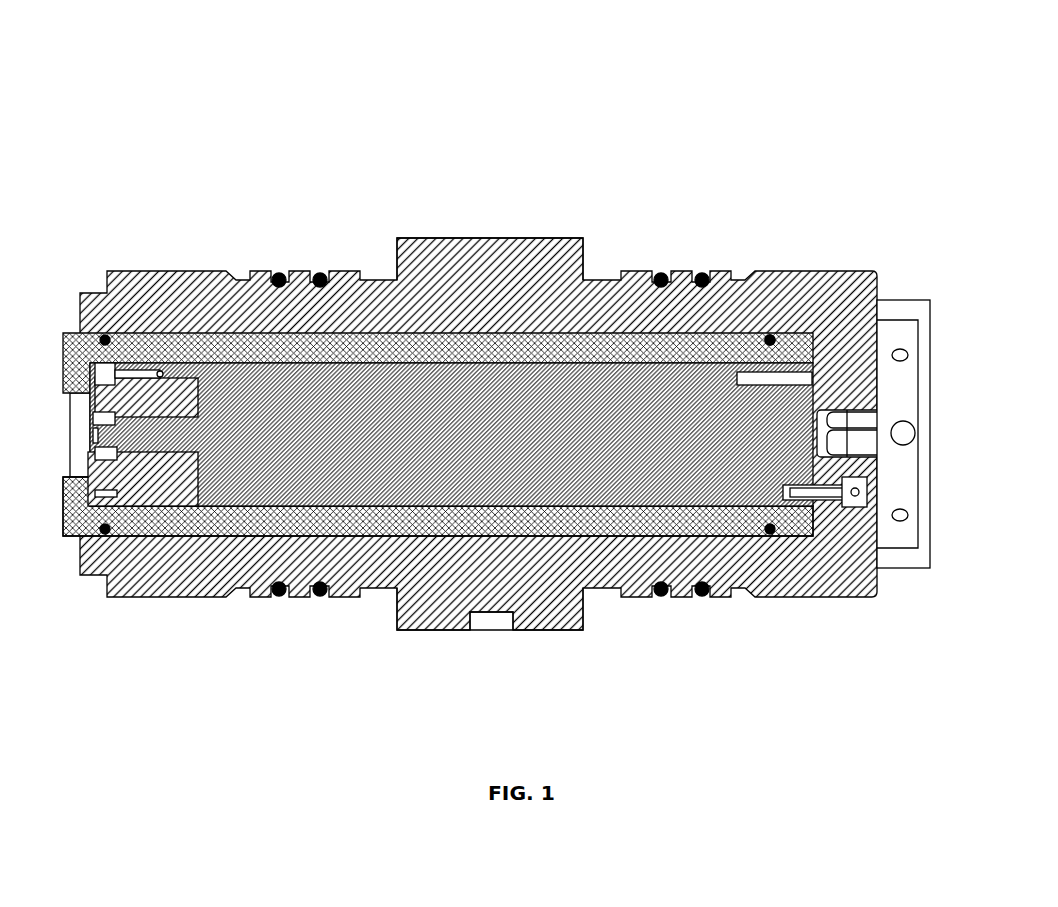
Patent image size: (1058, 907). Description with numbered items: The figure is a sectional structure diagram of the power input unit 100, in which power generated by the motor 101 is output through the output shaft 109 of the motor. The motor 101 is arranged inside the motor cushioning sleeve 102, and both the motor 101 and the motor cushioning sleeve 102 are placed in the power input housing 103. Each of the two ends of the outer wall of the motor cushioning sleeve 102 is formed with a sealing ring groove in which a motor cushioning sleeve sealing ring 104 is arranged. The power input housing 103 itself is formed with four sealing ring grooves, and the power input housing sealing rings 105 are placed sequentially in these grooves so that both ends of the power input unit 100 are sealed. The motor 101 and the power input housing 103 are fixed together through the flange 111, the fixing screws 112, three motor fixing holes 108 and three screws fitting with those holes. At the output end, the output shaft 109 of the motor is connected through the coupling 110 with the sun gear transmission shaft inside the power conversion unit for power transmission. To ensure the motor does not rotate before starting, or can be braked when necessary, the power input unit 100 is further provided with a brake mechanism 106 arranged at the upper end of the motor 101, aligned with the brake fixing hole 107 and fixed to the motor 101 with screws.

The power input unit 100 is at (535, 238).
The motor 101 is at (662, 470).
The motor cushioning sleeve 102 is at (605, 523).
The power input housing 103 is at (415, 240).
The motor cushioning sleeve sealing rings 104 is at (105, 532).
The power input housing sealing rings 105 is at (278, 275).
The brake mechanism 106 is at (155, 490).
The brake fixing hole 107 is at (127, 370).
The motor fixing holes 108 is at (770, 340).
The output shaft of the motor 109 is at (848, 507).
The coupling 110 is at (868, 410).
The flange 111 is at (908, 522).
The fixing screws 112 is at (902, 348).